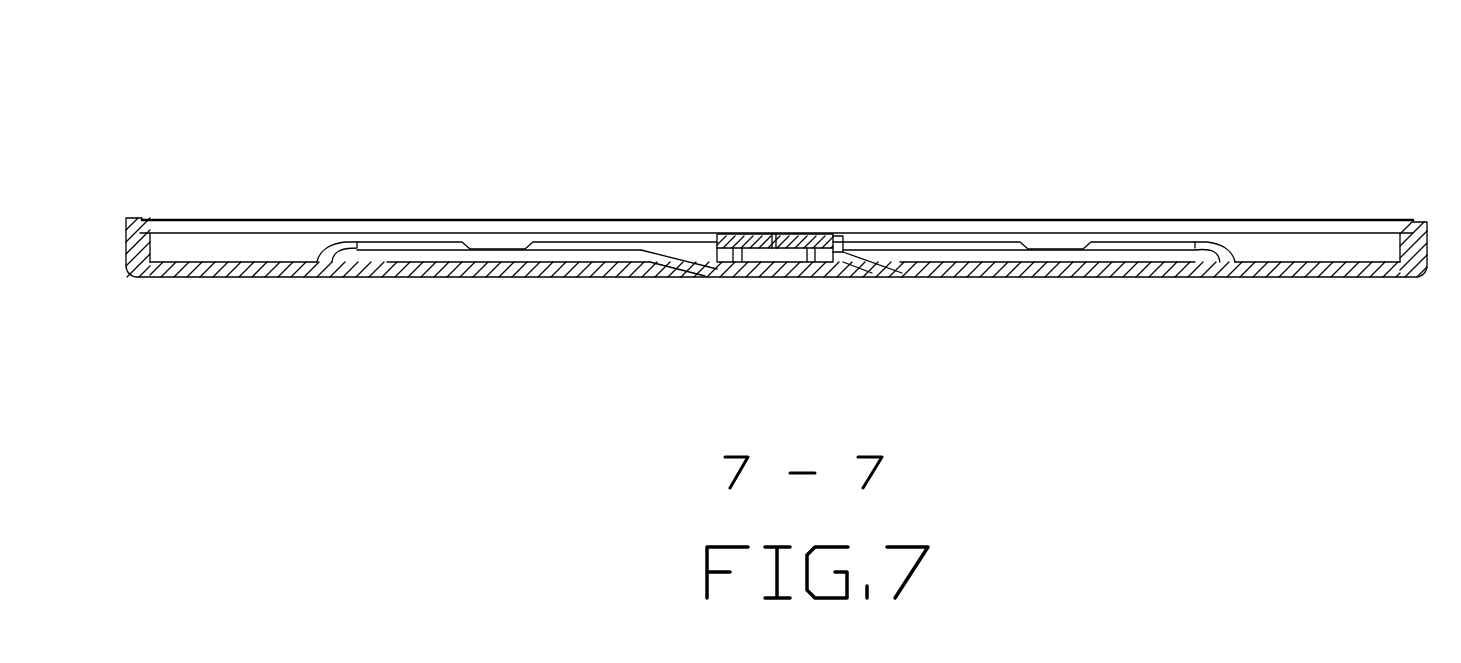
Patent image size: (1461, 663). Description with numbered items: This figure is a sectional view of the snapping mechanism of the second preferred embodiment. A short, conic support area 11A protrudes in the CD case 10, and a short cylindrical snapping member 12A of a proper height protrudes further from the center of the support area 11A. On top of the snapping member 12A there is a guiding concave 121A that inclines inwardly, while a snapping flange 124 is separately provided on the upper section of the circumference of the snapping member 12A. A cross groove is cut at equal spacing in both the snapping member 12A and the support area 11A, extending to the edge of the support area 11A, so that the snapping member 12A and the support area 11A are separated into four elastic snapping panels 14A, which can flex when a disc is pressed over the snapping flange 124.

The CD case 10 is at (136, 205).
The support area 11A is at (703, 248).
The guiding concave 121A is at (773, 243).
The snapping member 12A is at (812, 238).
The snapping flange 124 is at (840, 240).
The elastic snapping panels 14A is at (868, 262).